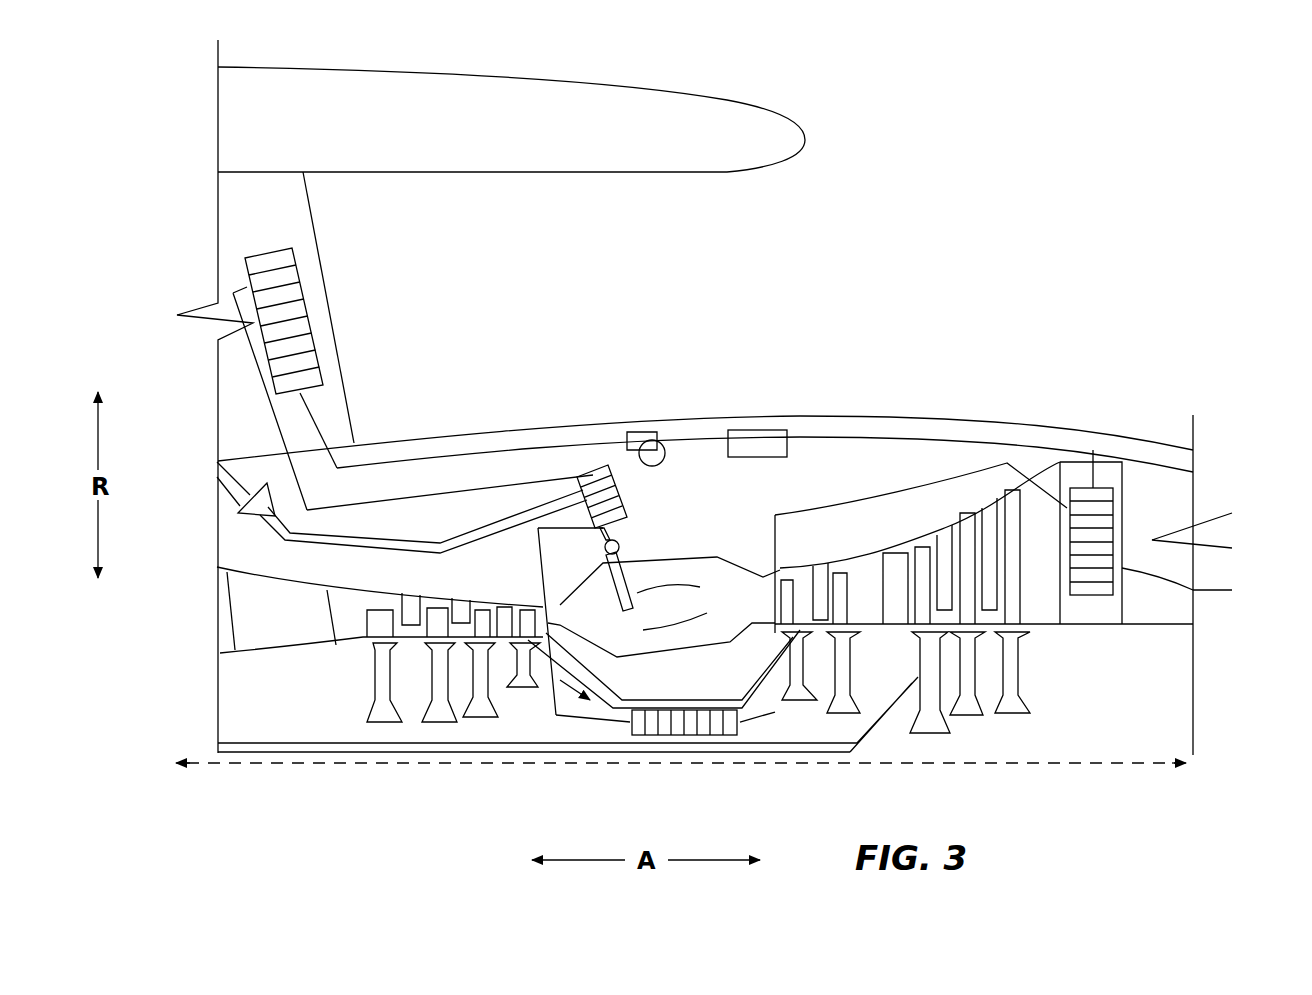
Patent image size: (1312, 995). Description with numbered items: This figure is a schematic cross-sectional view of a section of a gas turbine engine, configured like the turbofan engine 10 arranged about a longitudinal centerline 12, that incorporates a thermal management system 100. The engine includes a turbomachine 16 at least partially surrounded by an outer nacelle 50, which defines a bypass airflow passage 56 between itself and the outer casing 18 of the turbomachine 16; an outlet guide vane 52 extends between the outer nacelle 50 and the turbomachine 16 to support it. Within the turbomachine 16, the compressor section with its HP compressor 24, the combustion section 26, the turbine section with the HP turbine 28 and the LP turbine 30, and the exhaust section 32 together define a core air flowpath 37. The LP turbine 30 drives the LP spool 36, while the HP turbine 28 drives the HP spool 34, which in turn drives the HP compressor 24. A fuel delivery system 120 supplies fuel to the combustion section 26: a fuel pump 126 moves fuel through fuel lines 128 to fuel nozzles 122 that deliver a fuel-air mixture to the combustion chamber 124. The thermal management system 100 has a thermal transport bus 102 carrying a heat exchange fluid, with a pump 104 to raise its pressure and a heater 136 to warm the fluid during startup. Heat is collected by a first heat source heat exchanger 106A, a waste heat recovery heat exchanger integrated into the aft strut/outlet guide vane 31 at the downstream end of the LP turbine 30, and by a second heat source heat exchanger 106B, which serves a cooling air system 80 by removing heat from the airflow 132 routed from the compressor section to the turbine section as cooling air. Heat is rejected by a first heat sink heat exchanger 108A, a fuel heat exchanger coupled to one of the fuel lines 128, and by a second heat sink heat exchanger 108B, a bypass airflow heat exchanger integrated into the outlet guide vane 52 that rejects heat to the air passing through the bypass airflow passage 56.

The turbofan engine 10 is at (1000, 117).
The longitudinal centerline 12 is at (1030, 765).
The turbomachine 16 is at (836, 366).
The outer casing 18 is at (915, 418).
The high pressure compressor 24 is at (354, 583).
The combustion section 26 is at (688, 541).
The HP turbine 28 is at (820, 551).
The LP turbine 30 is at (968, 488).
The aft strut/outlet guide vane 31 is at (1193, 565).
The exhaust section 32 is at (1181, 503).
The HP spool 34 is at (675, 693).
The LP spool 36 is at (463, 745).
The core air flowpath 37 is at (1158, 484).
The outer nacelle 50 is at (432, 92).
The outlet guide vane 52 is at (305, 212).
The bypass airflow passage 56 is at (553, 279).
The cooling air system 80 is at (604, 731).
The thermal management system 100 is at (580, 406).
The thermal transport bus 102 is at (455, 453).
The pump 104 is at (655, 432).
The first heat source heat exchanger 106A is at (1102, 540).
The second heat source heat exchanger 106B is at (697, 725).
The first heat sink heat exchanger 108A is at (606, 464).
The second heat sink heat exchanger 108B is at (280, 302).
The fuel delivery system 120 is at (435, 516).
The fuel nozzles 122 is at (632, 582).
The combustion chamber 124 is at (694, 614).
The fuel pump 126 is at (242, 500).
The fuel lines 128 is at (323, 537).
The airflow 132 is at (557, 690).
The heater 136 is at (780, 430).